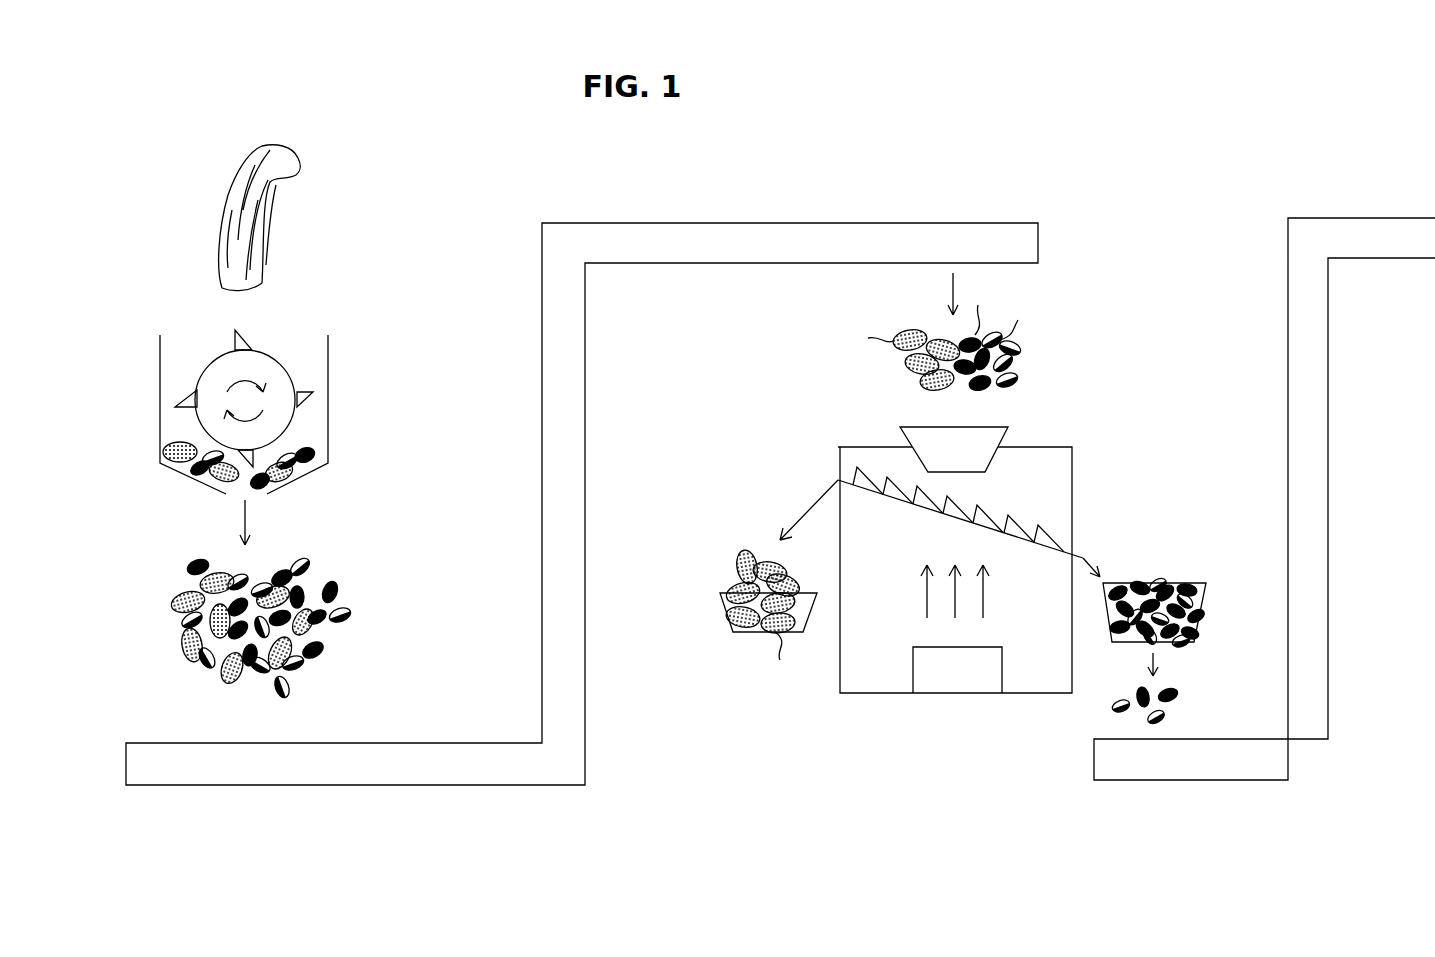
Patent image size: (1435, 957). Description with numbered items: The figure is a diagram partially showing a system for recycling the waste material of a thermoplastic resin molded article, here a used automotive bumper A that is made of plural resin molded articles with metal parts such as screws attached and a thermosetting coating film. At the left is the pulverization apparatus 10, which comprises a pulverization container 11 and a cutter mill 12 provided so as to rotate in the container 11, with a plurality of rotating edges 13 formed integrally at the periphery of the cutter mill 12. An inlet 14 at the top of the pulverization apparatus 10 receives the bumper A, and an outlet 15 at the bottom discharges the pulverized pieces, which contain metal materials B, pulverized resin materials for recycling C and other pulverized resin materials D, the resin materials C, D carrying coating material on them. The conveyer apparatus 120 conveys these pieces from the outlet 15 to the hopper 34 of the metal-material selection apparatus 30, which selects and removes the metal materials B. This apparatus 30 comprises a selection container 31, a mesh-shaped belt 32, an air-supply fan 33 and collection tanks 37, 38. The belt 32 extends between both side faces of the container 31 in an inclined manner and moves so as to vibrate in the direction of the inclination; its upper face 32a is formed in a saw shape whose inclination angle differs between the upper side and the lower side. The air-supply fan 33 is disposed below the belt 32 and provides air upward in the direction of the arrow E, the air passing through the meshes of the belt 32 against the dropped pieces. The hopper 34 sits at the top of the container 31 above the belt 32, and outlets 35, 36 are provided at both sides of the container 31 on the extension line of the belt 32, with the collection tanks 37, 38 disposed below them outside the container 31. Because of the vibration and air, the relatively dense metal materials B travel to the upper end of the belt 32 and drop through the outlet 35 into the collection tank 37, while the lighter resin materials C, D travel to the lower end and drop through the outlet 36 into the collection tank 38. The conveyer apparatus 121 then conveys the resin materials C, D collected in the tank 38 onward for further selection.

The pulverization apparatus 10 is at (342, 338).
The pulverization container 11 is at (328, 394).
The cutter mill 12 is at (265, 352).
The rotating edges 13 is at (187, 398).
The inlet 14 is at (194, 315).
The outlet 15 is at (265, 510).
The metal-material selection apparatus 30 is at (1094, 389).
The selection container 31 is at (1073, 460).
The mesh-shaped belt 32 is at (960, 484).
The upper face 32a is at (893, 475).
The air-supply fan 33 is at (955, 683).
The hopper 34 is at (995, 425).
The outlet 35 is at (821, 474).
The outlet 36 is at (1083, 540).
The collection tank 37 is at (727, 633).
The collection tank 38 is at (1196, 642).
The conveyer apparatus 120 is at (330, 785).
The conveyer apparatus 121 is at (1210, 780).
The bumper A is at (255, 150).
The metal materials B is at (171, 601).
The pulverized resin materials for recycling C is at (310, 566).
The other pulverized resin materials D is at (190, 562).
The arrow E is at (965, 593).